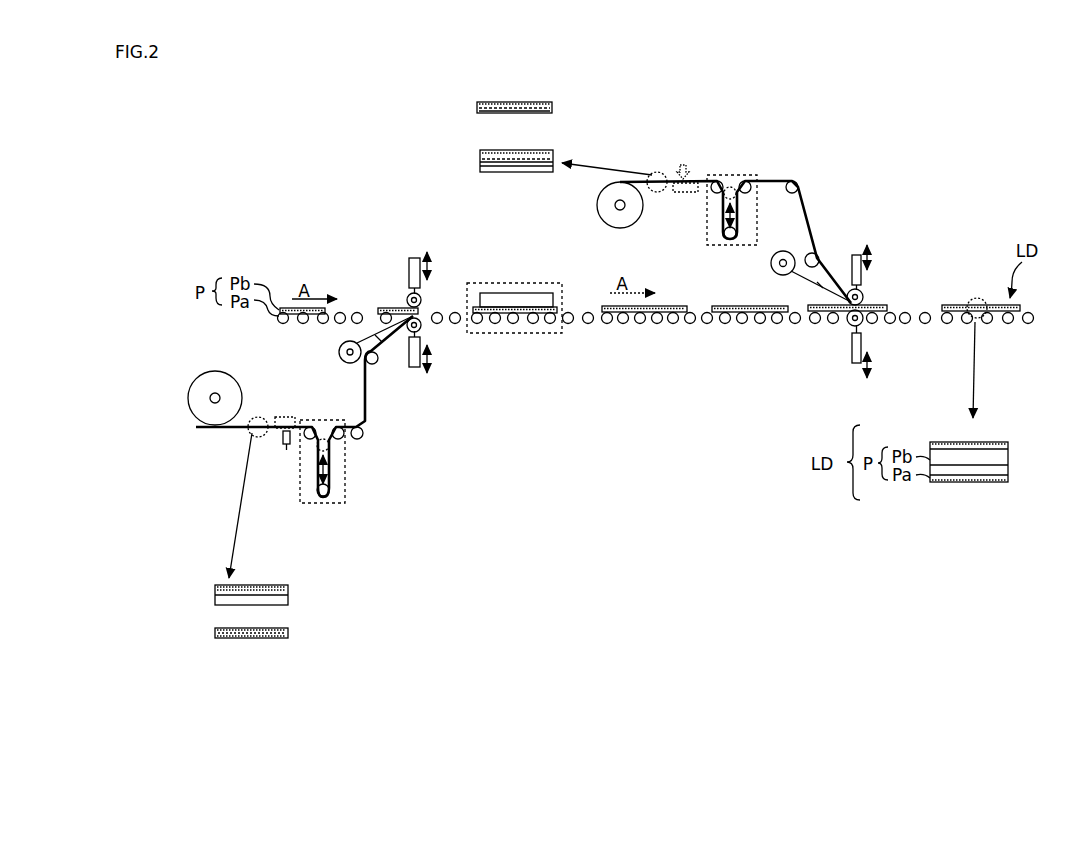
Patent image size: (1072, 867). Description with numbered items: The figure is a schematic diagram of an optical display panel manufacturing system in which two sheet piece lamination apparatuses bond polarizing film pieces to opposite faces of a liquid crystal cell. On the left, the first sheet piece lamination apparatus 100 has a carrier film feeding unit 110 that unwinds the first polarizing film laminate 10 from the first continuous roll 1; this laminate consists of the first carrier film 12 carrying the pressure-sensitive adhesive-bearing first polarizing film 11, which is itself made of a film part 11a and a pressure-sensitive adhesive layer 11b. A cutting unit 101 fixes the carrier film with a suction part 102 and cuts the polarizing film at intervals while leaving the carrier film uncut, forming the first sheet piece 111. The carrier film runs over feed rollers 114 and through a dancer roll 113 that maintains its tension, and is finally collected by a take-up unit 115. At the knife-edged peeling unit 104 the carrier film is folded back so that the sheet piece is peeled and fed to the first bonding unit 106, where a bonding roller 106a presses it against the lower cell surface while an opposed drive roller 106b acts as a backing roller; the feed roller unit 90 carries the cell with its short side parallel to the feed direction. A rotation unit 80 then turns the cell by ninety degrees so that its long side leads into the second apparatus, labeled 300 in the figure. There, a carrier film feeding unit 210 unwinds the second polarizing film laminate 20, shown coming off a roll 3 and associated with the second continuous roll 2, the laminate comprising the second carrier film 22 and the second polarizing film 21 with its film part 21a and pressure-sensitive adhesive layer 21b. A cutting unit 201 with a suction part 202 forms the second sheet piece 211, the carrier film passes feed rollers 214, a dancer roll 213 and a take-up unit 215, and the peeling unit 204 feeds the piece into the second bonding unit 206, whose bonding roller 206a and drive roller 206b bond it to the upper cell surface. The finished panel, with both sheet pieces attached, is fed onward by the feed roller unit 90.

The first continuous roll 1 is at (212, 426).
The second continuous roll 2 is at (435, 146).
The roll of cover sheet 3 is at (608, 226).
The first polarizing film laminate 10 is at (258, 436).
The first polarizing film 11 is at (288, 602).
The film part 11a is at (288, 637).
The pressure-sensitive adhesive layer 11b is at (288, 630).
The first carrier film 12 is at (378, 340).
The second polarizing film laminate 20 is at (660, 178).
The second polarizing film 21 is at (428, 92).
The film part 21a is at (477, 106).
The pressure-sensitive adhesive layer 21b is at (477, 111).
The second carrier film 22 is at (480, 167).
The rotation unit 80 is at (507, 283).
The feed roller unit 90 is at (280, 324).
The first sheet piece lamination apparatus 100 is at (205, 535).
The cutting unit 101 is at (286, 450).
The suction part 102 is at (285, 416).
The peeling unit 104 is at (383, 343).
The first bonding unit 106 is at (402, 376).
The bonding roller 106a is at (421, 327).
The drive roller 106b is at (407, 300).
The carrier film feeding unit 110 is at (190, 519).
The first sheet piece 111 is at (930, 478).
The dancer roll 113 is at (345, 483).
The feed rollers 114 is at (365, 437).
The take-up unit 115 is at (347, 352).
The cutting unit 201 is at (686, 166).
The suction part 202 is at (682, 193).
The peeling unit 204 is at (821, 285).
The second bonding unit 206 is at (845, 232).
The bonding roller 206a is at (866, 292).
The drive roller 206b is at (848, 322).
The carrier film feeding unit 210 is at (590, 140).
The second sheet piece 211 is at (930, 445).
The dancer roll 213 is at (745, 175).
The feed rollers 214 is at (799, 185).
The take-up unit 215 is at (780, 263).
The second laminating apparatus 300 is at (822, 120).